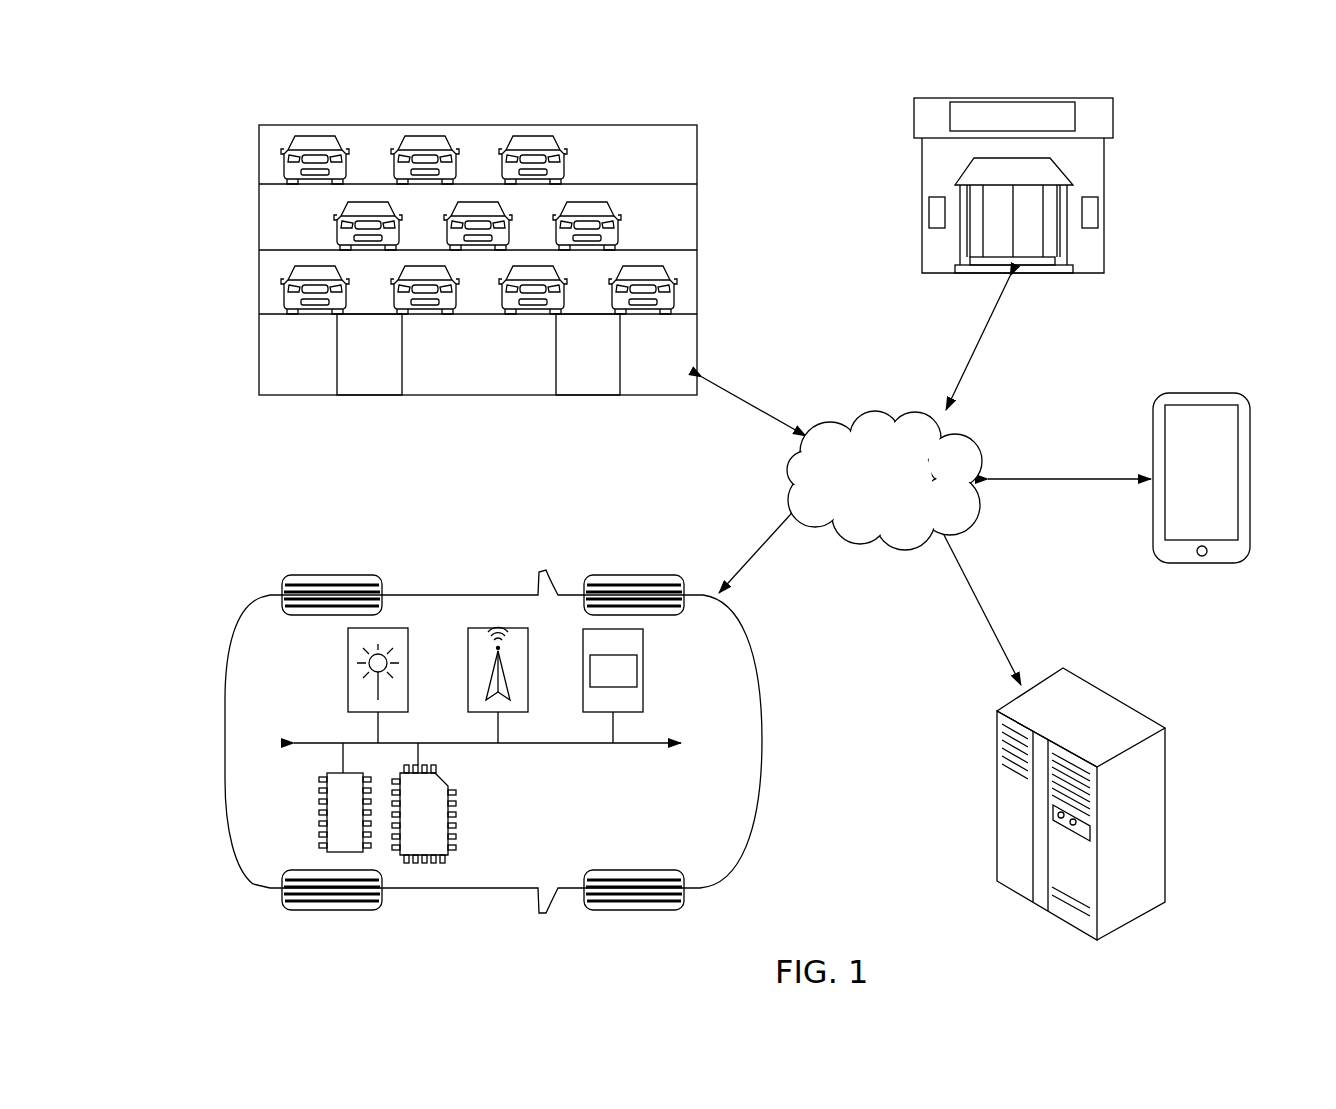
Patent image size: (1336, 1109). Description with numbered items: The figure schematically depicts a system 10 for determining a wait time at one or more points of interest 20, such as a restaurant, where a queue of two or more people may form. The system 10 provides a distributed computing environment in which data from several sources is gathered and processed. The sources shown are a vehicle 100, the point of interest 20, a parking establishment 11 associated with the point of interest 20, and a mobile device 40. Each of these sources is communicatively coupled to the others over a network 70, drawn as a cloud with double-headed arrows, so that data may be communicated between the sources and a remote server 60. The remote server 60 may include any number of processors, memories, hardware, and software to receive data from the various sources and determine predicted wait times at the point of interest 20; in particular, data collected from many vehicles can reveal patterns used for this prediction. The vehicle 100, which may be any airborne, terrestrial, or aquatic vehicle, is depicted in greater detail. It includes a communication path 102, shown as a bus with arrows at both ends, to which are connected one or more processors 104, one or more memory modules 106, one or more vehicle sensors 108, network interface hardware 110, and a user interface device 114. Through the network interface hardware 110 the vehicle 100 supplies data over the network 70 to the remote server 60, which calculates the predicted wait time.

The system 10 is at (196, 138).
The parking establishment 11 is at (708, 217).
The point of interest 20 is at (1134, 185).
The mobile device 40 is at (1222, 381).
The remote server 60 is at (1180, 732).
The network 70 is at (874, 412).
The vehicle 100 is at (210, 551).
The communication path 102 is at (325, 743).
The processor 104 is at (320, 777).
The memory module 106 is at (445, 858).
The vehicle sensor 108 is at (392, 628).
The network interface hardware 110 is at (497, 628).
The user interface device 114 is at (645, 667).